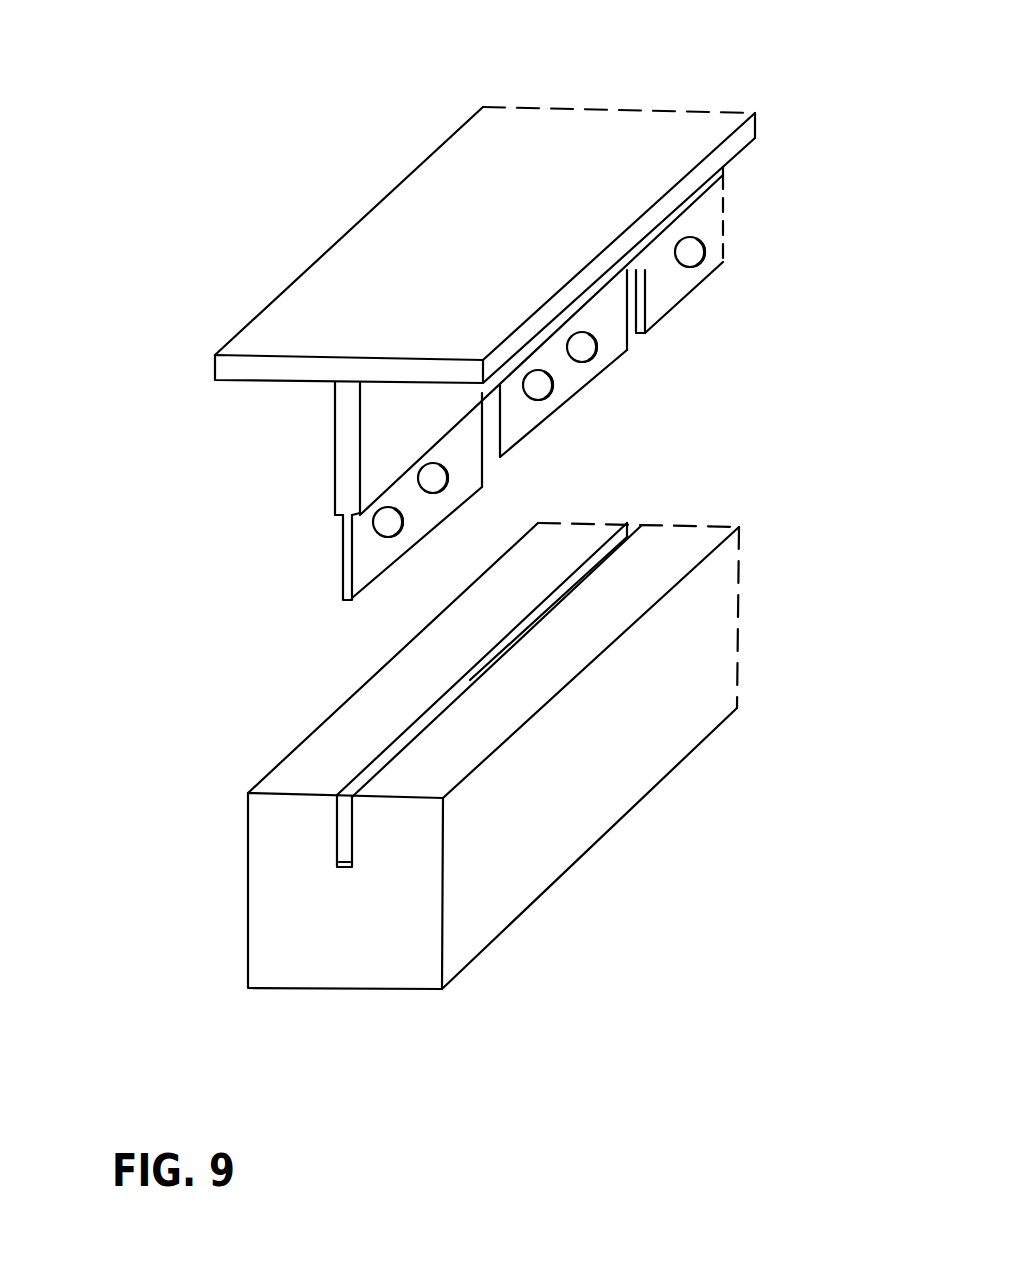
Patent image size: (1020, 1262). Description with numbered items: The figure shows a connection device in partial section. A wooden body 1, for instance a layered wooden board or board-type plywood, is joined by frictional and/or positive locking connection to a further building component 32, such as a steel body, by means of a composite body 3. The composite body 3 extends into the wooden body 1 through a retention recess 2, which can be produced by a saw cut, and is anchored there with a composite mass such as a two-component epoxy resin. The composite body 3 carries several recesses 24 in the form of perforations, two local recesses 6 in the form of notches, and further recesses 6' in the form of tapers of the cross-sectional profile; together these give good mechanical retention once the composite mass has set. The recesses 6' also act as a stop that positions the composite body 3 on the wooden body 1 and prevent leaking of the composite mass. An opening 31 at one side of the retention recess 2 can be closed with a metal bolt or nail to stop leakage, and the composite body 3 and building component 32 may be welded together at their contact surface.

The building component 32 is at (573, 147).
The composite body 3 is at (613, 380).
The recesses 6 is at (555, 386).
The recesses 6' is at (229, 519).
The recesses 24 is at (390, 560).
The wooden body 1 is at (650, 732).
The opening 31 is at (328, 820).
The retention recess 2 is at (343, 832).